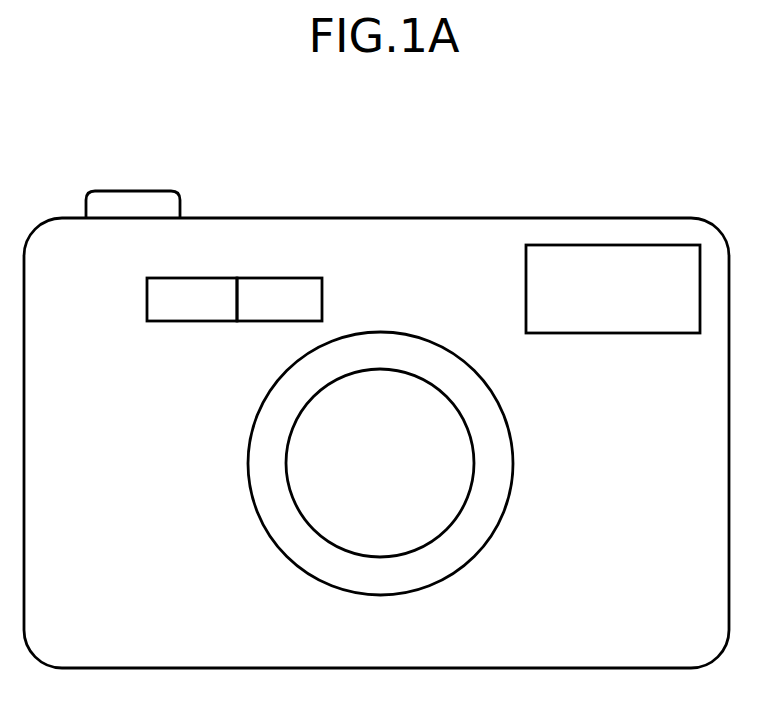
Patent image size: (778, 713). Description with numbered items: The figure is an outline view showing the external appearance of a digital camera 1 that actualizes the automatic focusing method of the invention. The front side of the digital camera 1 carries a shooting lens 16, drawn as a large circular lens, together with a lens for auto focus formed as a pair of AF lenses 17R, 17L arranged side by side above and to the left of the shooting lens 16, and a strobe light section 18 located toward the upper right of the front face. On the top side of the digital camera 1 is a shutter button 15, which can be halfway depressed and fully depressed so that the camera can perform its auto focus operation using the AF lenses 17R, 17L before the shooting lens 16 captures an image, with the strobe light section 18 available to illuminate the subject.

The digital camera 1 is at (620, 190).
The shutter button 15 is at (140, 190).
The shooting lens 16 is at (386, 557).
The lens for auto focus 17L is at (311, 278).
The lens for auto focus 17R is at (181, 322).
The strobe light section 18 is at (646, 334).